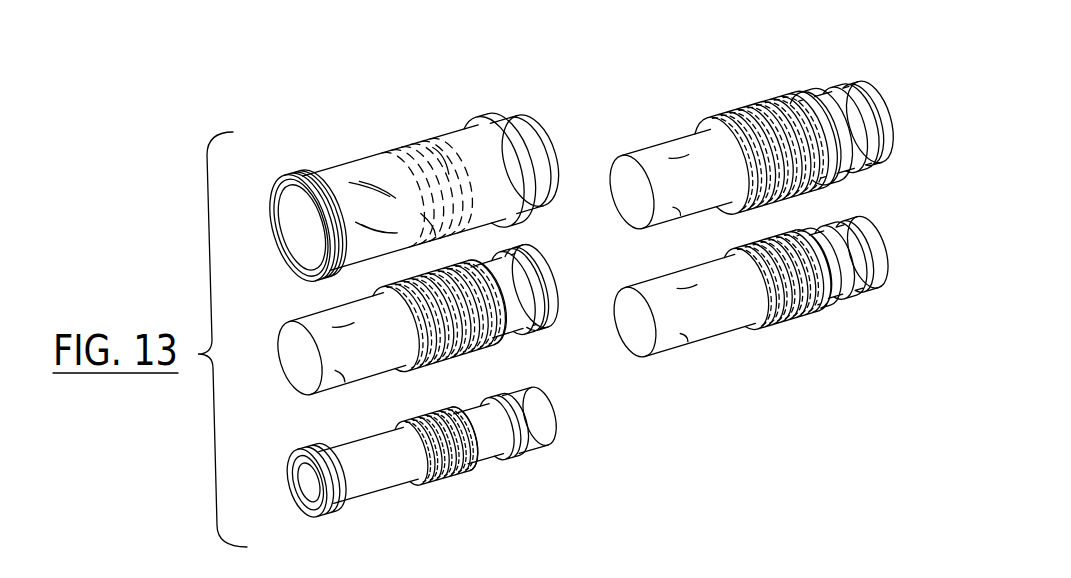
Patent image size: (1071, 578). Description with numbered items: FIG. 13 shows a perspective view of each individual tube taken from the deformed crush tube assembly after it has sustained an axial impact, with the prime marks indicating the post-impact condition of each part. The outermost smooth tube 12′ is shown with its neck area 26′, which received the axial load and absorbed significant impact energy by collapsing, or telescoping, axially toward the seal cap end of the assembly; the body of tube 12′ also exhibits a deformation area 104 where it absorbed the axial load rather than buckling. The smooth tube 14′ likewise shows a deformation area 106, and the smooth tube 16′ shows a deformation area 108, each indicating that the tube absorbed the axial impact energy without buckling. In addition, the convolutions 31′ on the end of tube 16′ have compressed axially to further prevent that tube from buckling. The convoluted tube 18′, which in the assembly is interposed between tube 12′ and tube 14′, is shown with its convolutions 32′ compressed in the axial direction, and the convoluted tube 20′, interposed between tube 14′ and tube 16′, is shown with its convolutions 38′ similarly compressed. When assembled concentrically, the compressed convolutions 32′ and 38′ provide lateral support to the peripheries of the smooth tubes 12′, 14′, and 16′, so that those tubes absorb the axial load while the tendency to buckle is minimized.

The tube 12′ is at (415, 164).
The neck area 26′ is at (300, 172).
The deformation area 104 is at (400, 157).
The tube 14′ is at (431, 321).
The deformation area 106 is at (457, 368).
The tube 16′ is at (434, 446).
The deformation area 108 is at (495, 462).
The convolutions 31′ is at (528, 447).
The tube 18′ is at (759, 137).
The convolutions 32′ is at (737, 110).
The tube 20′ is at (770, 287).
The convolutions 38′ is at (787, 320).